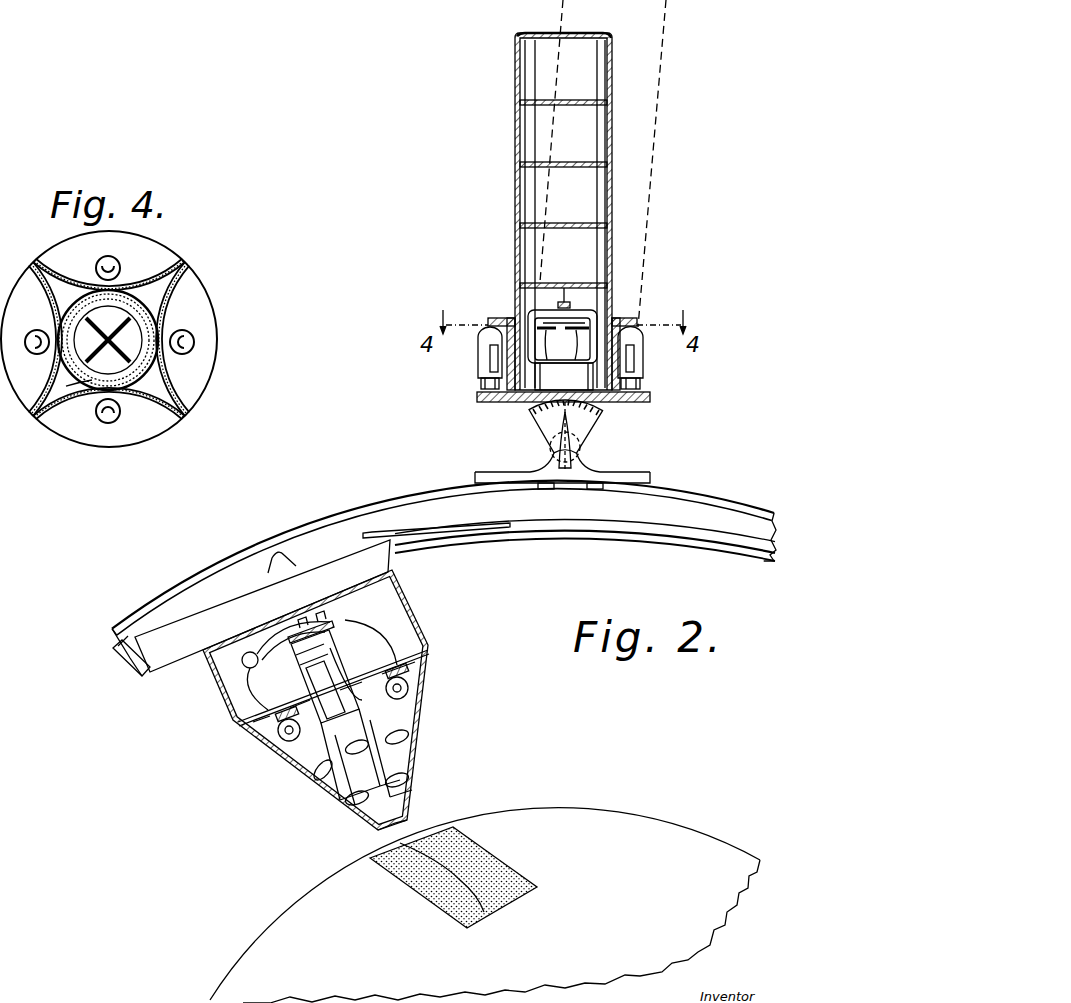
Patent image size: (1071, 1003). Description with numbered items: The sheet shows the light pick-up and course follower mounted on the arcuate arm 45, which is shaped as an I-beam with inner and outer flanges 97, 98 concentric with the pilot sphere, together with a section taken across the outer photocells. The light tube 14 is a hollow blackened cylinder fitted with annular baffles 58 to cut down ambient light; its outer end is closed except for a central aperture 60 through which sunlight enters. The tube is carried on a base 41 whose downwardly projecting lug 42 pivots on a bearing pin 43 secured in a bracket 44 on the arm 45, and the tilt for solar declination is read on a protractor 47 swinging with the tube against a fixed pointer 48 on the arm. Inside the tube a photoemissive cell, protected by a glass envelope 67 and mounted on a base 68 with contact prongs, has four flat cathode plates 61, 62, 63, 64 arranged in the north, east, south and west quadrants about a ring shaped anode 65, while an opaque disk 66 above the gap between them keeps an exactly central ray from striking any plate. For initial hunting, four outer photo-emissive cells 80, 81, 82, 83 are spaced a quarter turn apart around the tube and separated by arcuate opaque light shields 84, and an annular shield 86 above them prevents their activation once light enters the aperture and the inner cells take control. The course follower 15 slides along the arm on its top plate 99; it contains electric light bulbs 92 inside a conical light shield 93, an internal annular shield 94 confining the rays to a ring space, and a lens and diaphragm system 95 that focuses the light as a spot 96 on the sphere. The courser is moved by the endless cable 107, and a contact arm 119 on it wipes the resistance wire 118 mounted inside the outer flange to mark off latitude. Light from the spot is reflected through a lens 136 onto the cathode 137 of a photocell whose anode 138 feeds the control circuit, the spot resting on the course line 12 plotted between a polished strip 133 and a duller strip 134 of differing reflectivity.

In FIG. 2, the course line 12 is at (485, 905).
In FIG. 2, the light tube 14 is at (515, 186).
In FIG. 4, the light tube 14 is at (78, 318).
In FIG. 2, the course follower 15 is at (336, 796).
In FIG. 2, the base 41 is at (477, 397).
In FIG. 2, the lug 42 is at (530, 412).
In FIG. 2, the bearing pin 43 is at (581, 447).
In FIG. 2, the bracket 44 is at (530, 470).
In FIG. 2, the arm 45 is at (718, 516).
In FIG. 2, the protractor 47 is at (596, 412).
In FIG. 2, the pointer 48 is at (561, 420).
In FIG. 2, the annular baffles 58 is at (590, 105).
In FIG. 2, the aperture 60 is at (565, 32).
In FIG. 2, the photosensitive element 61 is at (577, 344).
In FIG. 4, the photosensitive element 61 is at (120, 360).
In FIG. 4, the photosensitive element 62 is at (128, 376).
In FIG. 2, the photosensitive element 63 is at (545, 344).
In FIG. 4, the photosensitive element 63 is at (86, 360).
In FIG. 4, the photosensitive element 64 is at (130, 306).
In FIG. 2, the ring shaped anode 65 is at (574, 318).
In FIG. 2, the disk 66 is at (566, 300).
In FIG. 2, the glass envelope 67 is at (598, 312).
In FIG. 4, the glass envelope 67 is at (92, 394).
In FIG. 2, the base 68 is at (564, 376).
In FIG. 2, the photo-emissive cell 80 is at (482, 362).
In FIG. 4, the photo-emissive cell 80 is at (34, 331).
In FIG. 4, the photo-emissive cell 81 is at (119, 265).
In FIG. 2, the photo-emissive cell 82 is at (640, 362).
In FIG. 4, the photo-emissive cell 82 is at (186, 354).
In FIG. 4, the photo-emissive cell 83 is at (116, 421).
In FIG. 4, the arcuate opaque light shields 84 is at (38, 272).
In FIG. 2, the annular shield 86 is at (630, 318).
In FIG. 2, the electric light bulbs 92 is at (408, 688).
In FIG. 2, the light shield 93 is at (412, 762).
In FIG. 2, the internal annular shield 94 is at (372, 700).
In FIG. 2, the lens and diaphragm system 95 is at (330, 750).
In FIG. 2, the light spot 96 is at (398, 830).
In FIG. 2, the inner flange 97 is at (470, 549).
In FIG. 2, the outer flange 98 is at (312, 523).
In FIG. 2, the top plate 99 is at (262, 606).
In FIG. 2, the cable 107 is at (442, 535).
In FIG. 2, the resistance wire 118 is at (122, 648).
In FIG. 2, the contact arm 119 is at (290, 560).
In FIG. 2, the surface 133 is at (420, 882).
In FIG. 2, the surface 134 is at (500, 864).
In FIG. 2, the lens 136 is at (355, 757).
In FIG. 2, the cathode 137 is at (323, 667).
In FIG. 2, the anode 138 is at (346, 708).